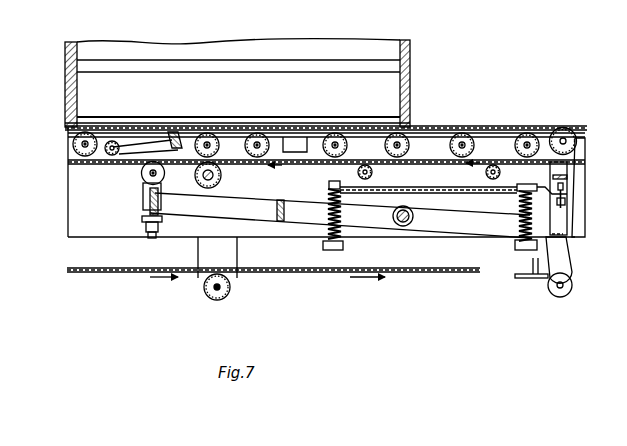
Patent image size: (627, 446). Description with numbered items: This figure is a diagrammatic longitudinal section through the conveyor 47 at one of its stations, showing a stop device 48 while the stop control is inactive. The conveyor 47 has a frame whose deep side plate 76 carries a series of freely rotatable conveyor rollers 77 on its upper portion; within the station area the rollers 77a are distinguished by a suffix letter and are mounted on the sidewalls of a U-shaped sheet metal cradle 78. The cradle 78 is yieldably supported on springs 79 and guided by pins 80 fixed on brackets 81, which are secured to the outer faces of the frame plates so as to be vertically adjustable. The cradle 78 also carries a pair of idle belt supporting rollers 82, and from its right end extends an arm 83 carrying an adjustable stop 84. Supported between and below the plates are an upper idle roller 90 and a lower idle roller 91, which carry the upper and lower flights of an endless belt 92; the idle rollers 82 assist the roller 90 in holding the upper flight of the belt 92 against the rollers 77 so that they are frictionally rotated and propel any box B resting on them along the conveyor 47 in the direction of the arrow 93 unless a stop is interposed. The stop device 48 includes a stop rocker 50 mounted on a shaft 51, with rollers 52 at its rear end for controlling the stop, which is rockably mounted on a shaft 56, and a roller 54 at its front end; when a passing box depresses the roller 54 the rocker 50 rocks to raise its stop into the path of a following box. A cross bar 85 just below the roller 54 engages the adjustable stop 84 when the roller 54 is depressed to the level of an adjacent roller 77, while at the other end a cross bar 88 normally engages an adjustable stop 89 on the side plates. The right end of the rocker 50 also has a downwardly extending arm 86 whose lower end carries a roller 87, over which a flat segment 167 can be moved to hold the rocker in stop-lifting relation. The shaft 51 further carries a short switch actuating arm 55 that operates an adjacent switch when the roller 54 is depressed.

The box B is at (410, 67).
The arrow 93 is at (256, 33).
The endless belt 92 is at (427, 158).
The conveyor rollers 77 is at (207, 133).
The conveyor rollers 77a is at (337, 133).
The roller 54 is at (574, 132).
The shaft 56 is at (112, 155).
The switch actuating arm 55 is at (176, 131).
The stop device 48 is at (193, 210).
The side plate 76 is at (270, 232).
The stop rocker 50 is at (447, 224).
The rollers 52 is at (166, 174).
The upper idle roller 90 is at (222, 177).
The idle belt supporting rollers 82 is at (357, 172).
The pins 80 is at (329, 185).
The cradle 78 is at (463, 194).
The springs 79 is at (343, 212).
The brackets 81 is at (343, 248).
The shaft 51 is at (403, 227).
The cross bar 88 is at (149, 197).
The adjustable stop 89 is at (141, 219).
The cross bar 85 is at (568, 177).
The adjustable stop 84 is at (566, 189).
The arm 83 is at (567, 199).
The arm 86 is at (565, 257).
The roller 87 is at (573, 289).
The segment 167 is at (522, 280).
The lower idle roller 91 is at (230, 296).
The conveyor 47 is at (147, 282).